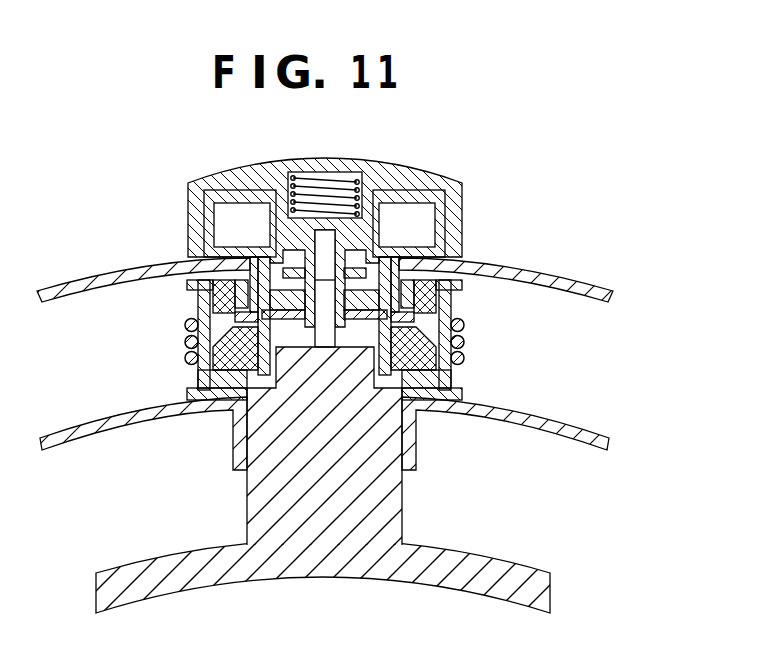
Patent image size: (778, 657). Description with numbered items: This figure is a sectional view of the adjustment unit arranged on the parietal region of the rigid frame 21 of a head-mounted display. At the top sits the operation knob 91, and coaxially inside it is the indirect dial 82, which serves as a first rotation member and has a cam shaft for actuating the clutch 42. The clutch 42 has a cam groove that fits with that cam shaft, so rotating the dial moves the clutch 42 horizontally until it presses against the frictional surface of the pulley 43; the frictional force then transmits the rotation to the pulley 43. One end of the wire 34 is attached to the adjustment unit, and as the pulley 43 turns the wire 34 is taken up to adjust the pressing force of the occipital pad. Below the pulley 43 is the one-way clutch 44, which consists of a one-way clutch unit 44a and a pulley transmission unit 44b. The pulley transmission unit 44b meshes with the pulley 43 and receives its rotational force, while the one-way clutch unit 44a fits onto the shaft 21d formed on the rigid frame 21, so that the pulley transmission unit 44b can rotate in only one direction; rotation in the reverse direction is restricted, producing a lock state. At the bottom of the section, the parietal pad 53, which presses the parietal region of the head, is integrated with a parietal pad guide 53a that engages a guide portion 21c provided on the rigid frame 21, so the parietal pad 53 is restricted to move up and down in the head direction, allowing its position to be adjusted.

The operation knob 91 is at (375, 180).
The indirect dial 82 is at (438, 203).
The shaft 21d is at (252, 288).
The pulley 43 is at (453, 278).
The rigid frame 21 is at (502, 268).
The wire 34 is at (186, 321).
The one-way clutch 44 is at (463, 327).
The one-way clutch unit 44a is at (451, 293).
The pulley transmission unit 44b is at (451, 310).
The clutch 42 is at (427, 350).
The guide portion 21c is at (411, 441).
The parietal pad guide 53a is at (376, 497).
The parietal pad 53 is at (518, 590).